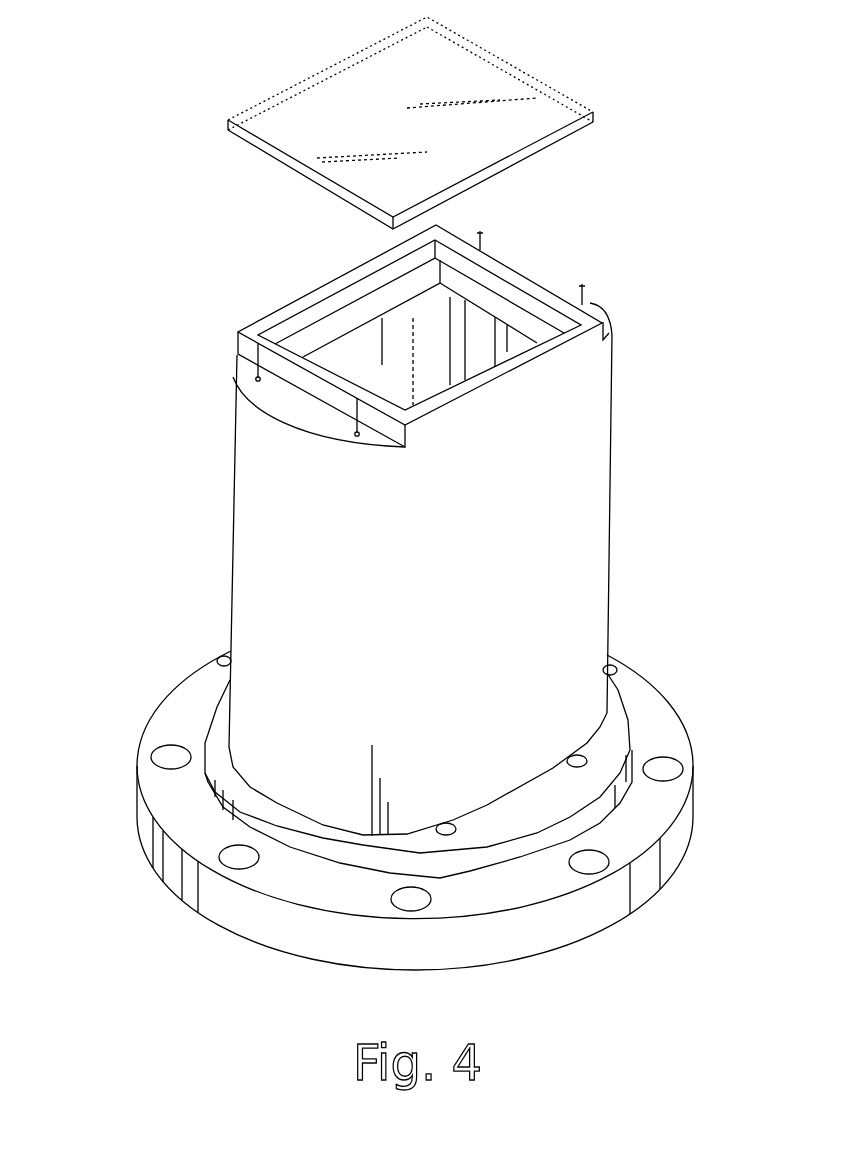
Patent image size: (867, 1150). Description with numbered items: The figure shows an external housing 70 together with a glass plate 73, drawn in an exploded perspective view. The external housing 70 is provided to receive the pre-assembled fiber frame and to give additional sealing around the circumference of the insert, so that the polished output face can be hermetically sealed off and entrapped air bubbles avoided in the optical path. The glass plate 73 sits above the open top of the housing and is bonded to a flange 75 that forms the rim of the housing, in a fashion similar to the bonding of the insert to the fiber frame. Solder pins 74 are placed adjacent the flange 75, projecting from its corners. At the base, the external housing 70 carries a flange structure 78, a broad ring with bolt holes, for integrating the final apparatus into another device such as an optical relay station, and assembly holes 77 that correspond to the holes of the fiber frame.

The external housing 70 is at (558, 575).
The glass plate 73 is at (493, 53).
The solder pins 74 is at (357, 410).
The flange 75 is at (277, 313).
The assembly holes 77 is at (456, 830).
The flange structure 78 is at (153, 793).